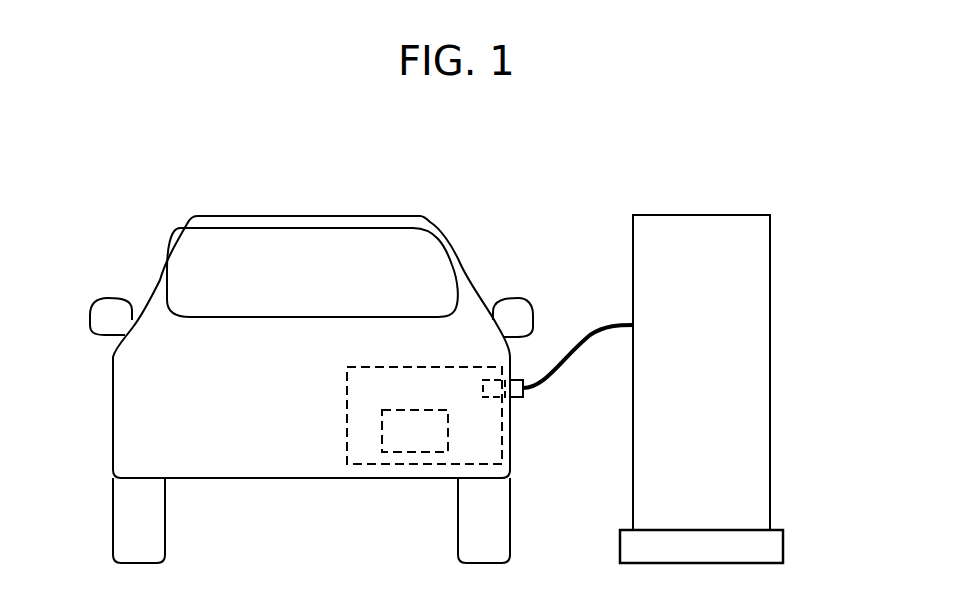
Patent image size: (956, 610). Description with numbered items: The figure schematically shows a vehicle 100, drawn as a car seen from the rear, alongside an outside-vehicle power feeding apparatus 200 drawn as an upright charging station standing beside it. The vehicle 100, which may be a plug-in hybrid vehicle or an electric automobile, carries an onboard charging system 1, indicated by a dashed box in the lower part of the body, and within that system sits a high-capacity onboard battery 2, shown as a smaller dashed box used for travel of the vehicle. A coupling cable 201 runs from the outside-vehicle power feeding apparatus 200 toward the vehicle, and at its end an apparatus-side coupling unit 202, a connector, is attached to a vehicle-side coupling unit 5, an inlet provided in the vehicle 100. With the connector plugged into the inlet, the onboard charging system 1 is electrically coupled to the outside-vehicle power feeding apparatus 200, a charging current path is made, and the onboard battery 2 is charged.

The vehicle 100 is at (113, 398).
The onboard charging system 1 is at (362, 467).
The onboard battery 2 is at (415, 455).
The vehicle-side coupling unit 5 is at (483, 386).
The outside-vehicle power feeding apparatus 200 is at (770, 290).
The coupling cable 201 is at (596, 332).
The apparatus-side coupling unit 202 is at (520, 398).